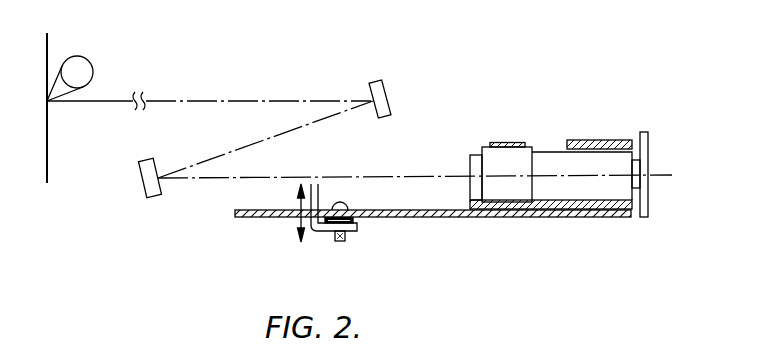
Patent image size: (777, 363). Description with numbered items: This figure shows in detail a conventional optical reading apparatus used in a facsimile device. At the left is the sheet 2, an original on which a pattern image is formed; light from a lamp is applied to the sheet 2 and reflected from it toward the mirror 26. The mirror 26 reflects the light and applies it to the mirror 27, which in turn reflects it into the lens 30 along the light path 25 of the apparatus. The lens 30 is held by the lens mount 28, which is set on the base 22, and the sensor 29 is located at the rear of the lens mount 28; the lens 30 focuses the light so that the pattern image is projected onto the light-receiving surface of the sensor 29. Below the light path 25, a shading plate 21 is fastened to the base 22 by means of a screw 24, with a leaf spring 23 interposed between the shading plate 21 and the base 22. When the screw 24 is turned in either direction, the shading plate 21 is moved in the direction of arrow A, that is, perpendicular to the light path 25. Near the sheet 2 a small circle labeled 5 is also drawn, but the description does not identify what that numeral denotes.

The sheet 2 is at (47, 160).
The object point 5 is at (88, 61).
The shading plate 21 is at (315, 232).
The base 22 is at (437, 218).
The leaf spring 23 is at (355, 224).
The screw 24 is at (348, 204).
The light path 25 is at (373, 175).
The mirror 26 is at (382, 81).
The mirror 27 is at (154, 197).
The lens mount 28 is at (597, 140).
The sensor 29 is at (634, 158).
The lens 30 is at (483, 147).
The arrow A is at (298, 205).